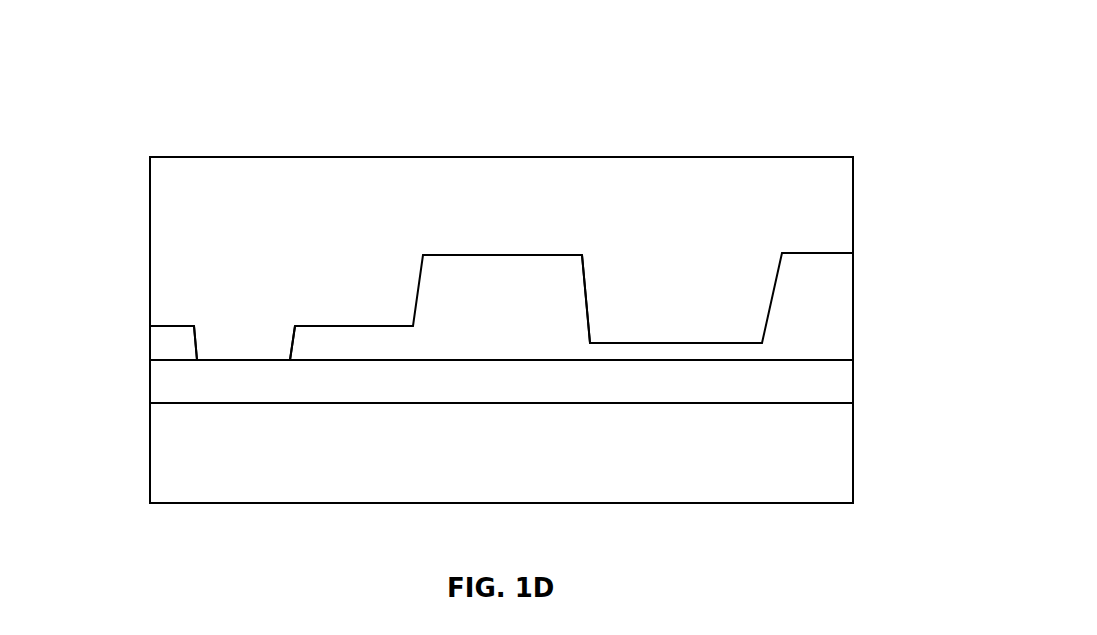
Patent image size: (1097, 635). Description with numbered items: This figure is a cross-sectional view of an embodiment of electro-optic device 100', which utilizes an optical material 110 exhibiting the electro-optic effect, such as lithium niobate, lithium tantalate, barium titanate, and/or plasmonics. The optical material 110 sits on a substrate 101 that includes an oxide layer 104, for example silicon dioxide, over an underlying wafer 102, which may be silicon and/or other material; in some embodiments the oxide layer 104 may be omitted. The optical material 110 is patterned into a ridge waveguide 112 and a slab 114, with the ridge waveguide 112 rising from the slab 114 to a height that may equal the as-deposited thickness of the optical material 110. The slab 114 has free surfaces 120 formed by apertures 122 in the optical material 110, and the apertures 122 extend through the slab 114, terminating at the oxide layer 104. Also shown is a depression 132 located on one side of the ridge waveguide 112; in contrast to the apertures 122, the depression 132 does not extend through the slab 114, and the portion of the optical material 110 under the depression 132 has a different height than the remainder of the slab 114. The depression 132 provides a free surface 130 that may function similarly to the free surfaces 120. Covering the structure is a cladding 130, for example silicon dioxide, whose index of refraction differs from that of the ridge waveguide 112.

The electro-optic device 100' is at (501, 285).
The substrate 101 is at (106, 416).
The underlying wafer 102 is at (521, 454).
The oxide layer 104 is at (521, 393).
The optical material 110 is at (521, 336).
The ridge waveguide 112 is at (604, 277).
The slab 114 is at (352, 378).
The free surfaces 120 is at (266, 333).
The apertures 122 is at (251, 296).
The cladding 130 is at (378, 219).
The depression 132 is at (745, 262).